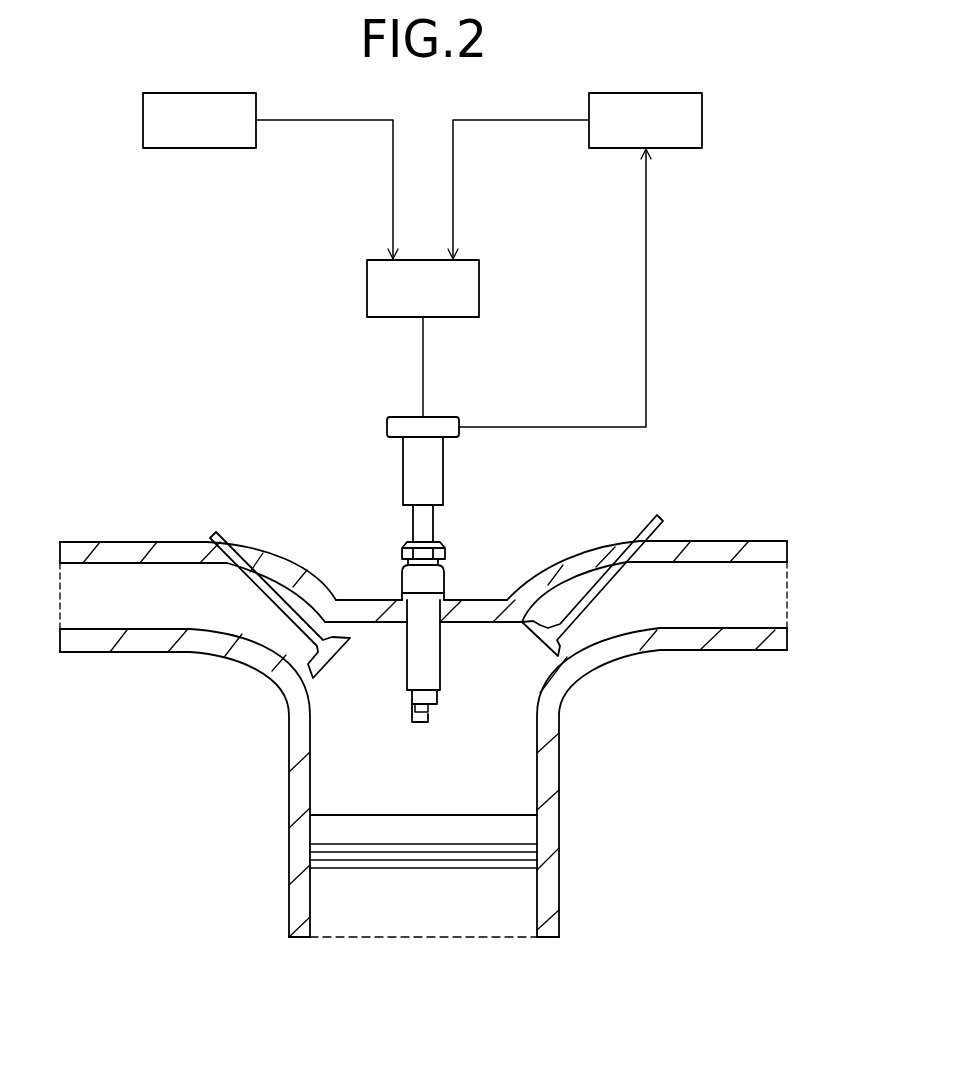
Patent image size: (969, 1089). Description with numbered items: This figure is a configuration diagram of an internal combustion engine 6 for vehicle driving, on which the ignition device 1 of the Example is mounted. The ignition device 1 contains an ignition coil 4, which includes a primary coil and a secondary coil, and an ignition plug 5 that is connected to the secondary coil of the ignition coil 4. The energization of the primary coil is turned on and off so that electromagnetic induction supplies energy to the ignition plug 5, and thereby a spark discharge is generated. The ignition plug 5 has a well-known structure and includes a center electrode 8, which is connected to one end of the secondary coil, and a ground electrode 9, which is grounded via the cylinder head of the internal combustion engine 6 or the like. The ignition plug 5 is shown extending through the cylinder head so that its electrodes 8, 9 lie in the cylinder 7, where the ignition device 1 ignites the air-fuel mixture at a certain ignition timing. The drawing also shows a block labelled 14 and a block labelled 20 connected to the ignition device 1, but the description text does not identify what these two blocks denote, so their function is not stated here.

The ignition device 1 is at (507, 270).
The ignition coil 4 is at (425, 482).
The ignition plug 5 is at (425, 668).
The internal combustion engine 6 is at (582, 780).
The cylinder 7 is at (350, 795).
The center electrode 8 is at (433, 708).
The ground electrode 9 is at (417, 720).
The ECU 14 is at (702, 128).
The battery 20 is at (165, 150).